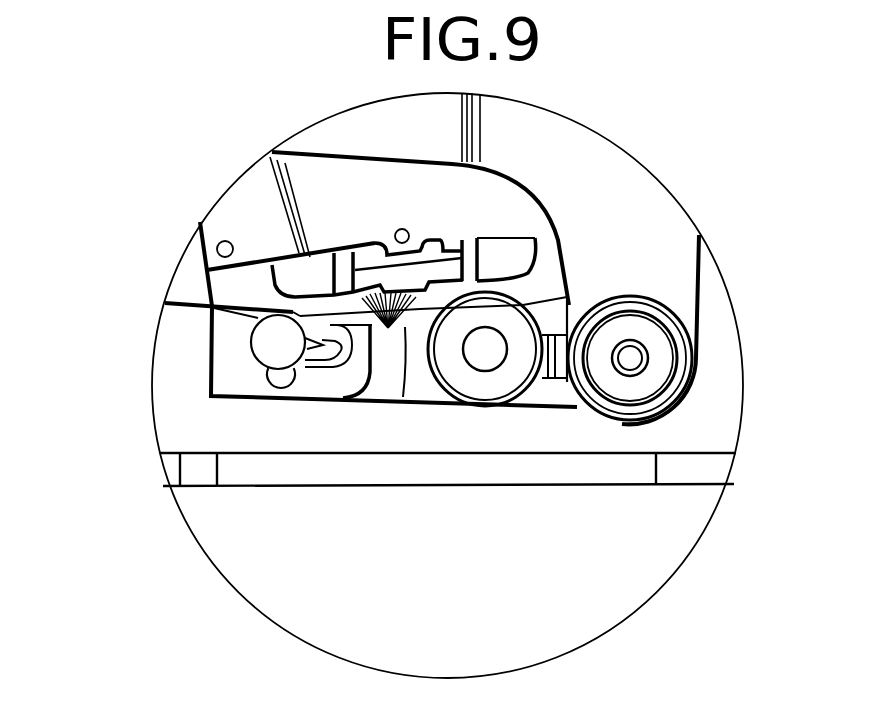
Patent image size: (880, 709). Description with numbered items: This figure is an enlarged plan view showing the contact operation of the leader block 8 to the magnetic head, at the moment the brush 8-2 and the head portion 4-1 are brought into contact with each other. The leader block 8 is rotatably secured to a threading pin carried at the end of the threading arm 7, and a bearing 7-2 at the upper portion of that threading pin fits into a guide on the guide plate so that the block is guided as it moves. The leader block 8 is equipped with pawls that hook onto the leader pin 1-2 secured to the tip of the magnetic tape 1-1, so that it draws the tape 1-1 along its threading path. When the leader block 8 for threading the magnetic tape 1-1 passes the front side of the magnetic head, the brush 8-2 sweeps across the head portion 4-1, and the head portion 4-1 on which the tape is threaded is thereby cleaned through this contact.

The threading arm 7 is at (585, 170).
The bearing 7-2 is at (667, 335).
The head portion 4-1 is at (398, 280).
The magnetic tape 1-1 is at (185, 300).
The leader pin 1-2 is at (282, 357).
The leader block 8 is at (365, 407).
The brush 8-2 is at (378, 332).